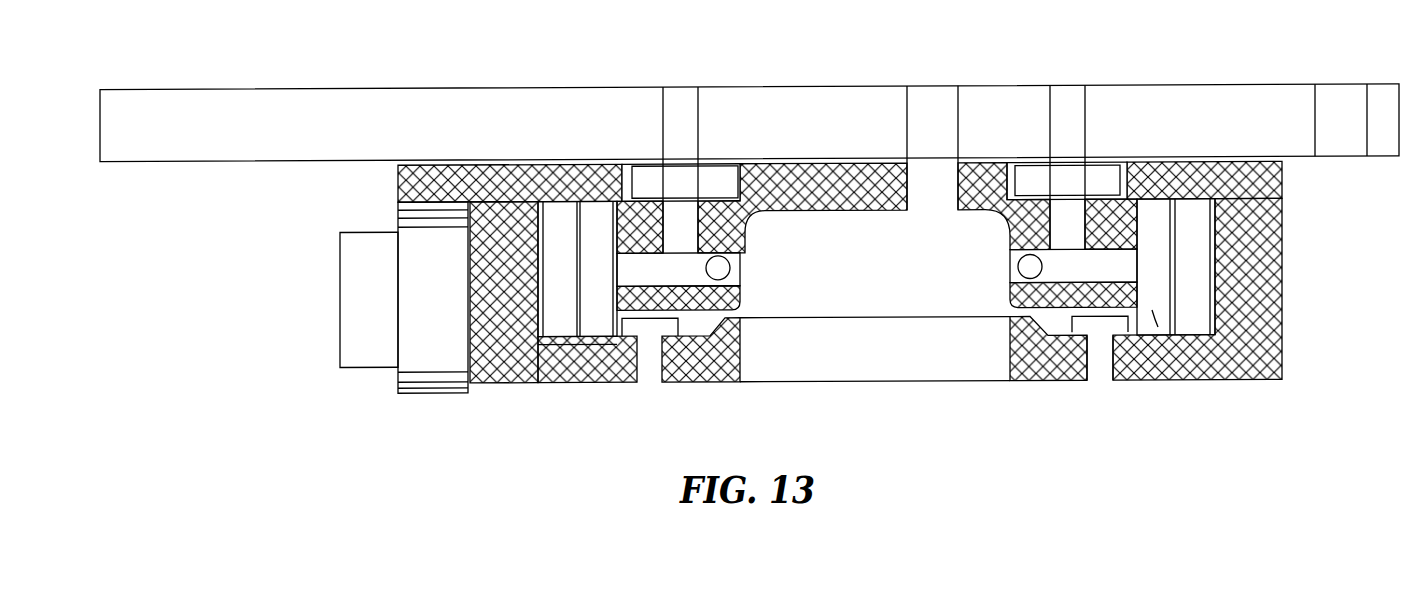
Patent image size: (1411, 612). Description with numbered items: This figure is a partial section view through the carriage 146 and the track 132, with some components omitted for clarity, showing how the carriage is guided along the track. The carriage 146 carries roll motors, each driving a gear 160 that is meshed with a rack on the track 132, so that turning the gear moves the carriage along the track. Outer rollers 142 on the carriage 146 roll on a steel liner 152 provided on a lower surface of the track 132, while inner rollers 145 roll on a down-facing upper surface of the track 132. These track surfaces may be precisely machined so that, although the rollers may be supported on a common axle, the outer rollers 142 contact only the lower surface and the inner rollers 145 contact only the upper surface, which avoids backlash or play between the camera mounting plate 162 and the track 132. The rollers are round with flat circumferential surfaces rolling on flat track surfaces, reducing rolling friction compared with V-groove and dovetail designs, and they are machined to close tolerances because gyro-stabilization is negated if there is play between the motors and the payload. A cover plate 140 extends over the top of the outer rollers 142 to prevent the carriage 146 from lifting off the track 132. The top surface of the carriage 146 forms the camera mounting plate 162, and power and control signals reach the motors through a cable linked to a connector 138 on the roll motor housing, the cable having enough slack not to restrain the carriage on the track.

The track 132 is at (1282, 256).
The connector 138 is at (369, 342).
The cover plate 140 is at (1253, 188).
The outer rollers 142 is at (1190, 312).
The inner rollers 145 is at (1196, 385).
The carriage 146 is at (1000, 234).
The steel liner 152 is at (1123, 345).
The gear 160 is at (650, 170).
The camera mounting plate 162 is at (1170, 118).